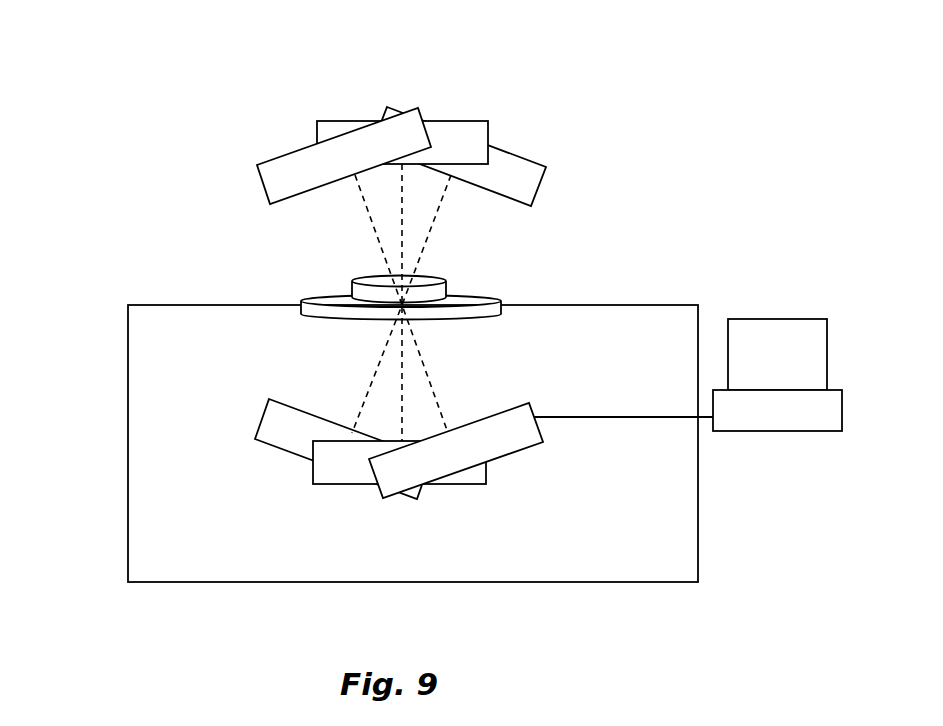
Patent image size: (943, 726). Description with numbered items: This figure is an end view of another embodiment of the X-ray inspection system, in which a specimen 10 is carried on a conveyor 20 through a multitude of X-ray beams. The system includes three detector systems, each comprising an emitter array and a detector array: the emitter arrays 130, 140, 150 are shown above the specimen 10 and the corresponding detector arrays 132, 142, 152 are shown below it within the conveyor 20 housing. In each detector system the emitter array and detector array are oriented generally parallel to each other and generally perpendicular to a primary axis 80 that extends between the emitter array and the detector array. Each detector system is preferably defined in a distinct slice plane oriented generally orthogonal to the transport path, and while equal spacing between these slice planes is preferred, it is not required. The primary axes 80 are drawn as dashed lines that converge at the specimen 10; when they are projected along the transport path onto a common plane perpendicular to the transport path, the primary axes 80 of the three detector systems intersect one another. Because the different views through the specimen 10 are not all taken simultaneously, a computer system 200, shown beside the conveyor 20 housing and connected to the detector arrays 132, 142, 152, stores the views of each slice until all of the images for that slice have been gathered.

The specimen 10 is at (448, 282).
The conveyor 20 is at (568, 304).
The primary axis 80 is at (400, 213).
The emitter array 130 is at (258, 177).
The emitter array 140 is at (452, 121).
The emitter array 150 is at (545, 178).
The detector array 132 is at (522, 450).
The detector array 142 is at (313, 477).
The detector array 152 is at (257, 426).
The computer system 200 is at (757, 319).